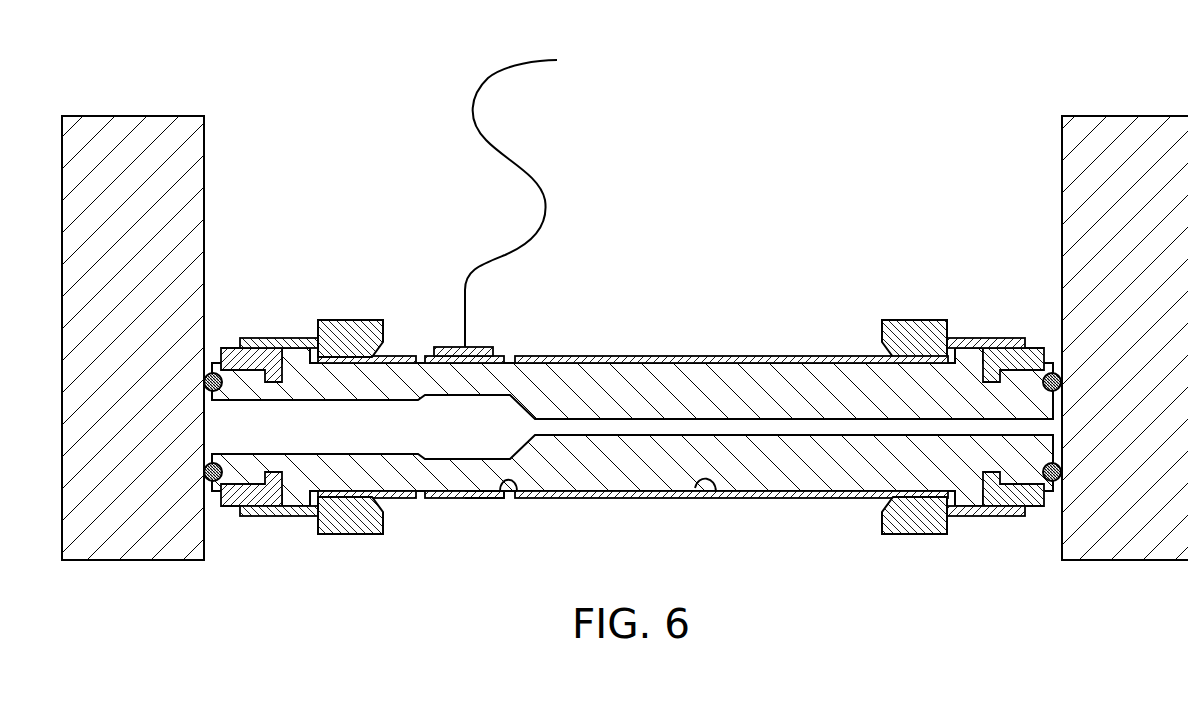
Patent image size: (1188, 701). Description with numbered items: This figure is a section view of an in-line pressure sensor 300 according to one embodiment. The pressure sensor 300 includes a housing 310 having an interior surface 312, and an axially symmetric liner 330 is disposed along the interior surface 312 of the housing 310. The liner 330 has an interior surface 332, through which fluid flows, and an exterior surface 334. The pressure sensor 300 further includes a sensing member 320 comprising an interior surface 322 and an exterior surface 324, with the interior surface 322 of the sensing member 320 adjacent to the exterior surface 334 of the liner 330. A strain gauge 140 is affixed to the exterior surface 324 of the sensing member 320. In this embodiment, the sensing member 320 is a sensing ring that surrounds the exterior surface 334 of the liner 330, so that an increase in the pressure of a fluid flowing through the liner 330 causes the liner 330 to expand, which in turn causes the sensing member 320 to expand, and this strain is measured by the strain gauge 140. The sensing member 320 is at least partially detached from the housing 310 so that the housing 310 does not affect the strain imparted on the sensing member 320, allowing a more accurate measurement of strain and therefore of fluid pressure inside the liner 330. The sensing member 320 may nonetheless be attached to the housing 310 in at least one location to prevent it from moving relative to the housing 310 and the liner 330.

The pressure sensor 300 is at (632, 321).
The strain gauge 140 is at (484, 347).
The housing 310 is at (392, 502).
The interior surface 312 is at (716, 492).
The sensing member 320 is at (445, 502).
The interior surface 322 is at (517, 491).
The exterior surface 324 is at (473, 502).
The liner 330 is at (645, 472).
The interior surface 332 is at (362, 401).
The exterior surface 334 is at (586, 362).